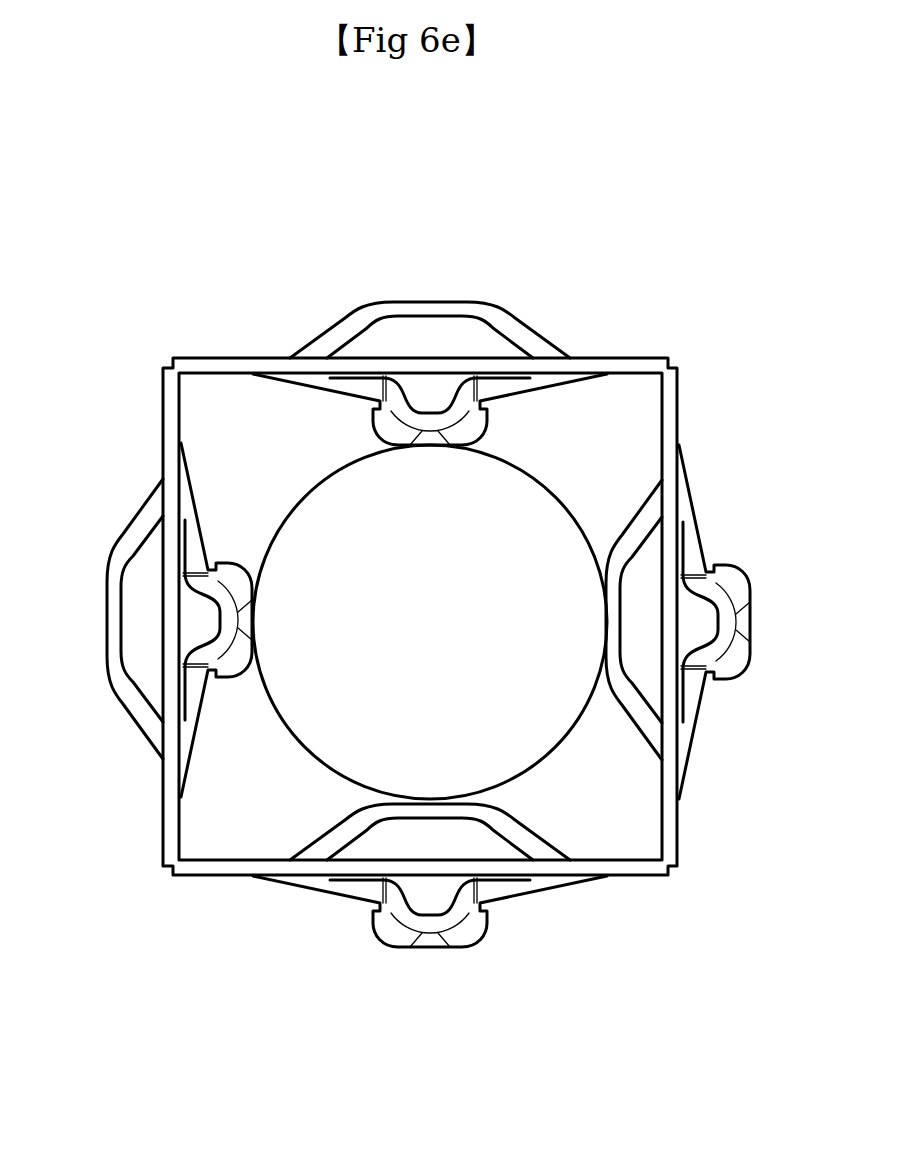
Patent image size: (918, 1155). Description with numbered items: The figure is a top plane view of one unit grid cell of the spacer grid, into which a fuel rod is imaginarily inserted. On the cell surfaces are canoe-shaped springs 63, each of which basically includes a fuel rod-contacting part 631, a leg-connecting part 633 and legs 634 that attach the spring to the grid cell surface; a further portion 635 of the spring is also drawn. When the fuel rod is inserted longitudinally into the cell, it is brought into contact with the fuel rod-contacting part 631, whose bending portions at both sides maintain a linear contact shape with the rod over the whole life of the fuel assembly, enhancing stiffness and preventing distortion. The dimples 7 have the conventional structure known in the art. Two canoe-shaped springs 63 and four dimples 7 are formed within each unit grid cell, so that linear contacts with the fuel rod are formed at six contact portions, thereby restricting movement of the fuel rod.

The canoe-shaped spring 63 is at (343, 400).
The fuel rod-contacting part 631 is at (430, 448).
The leg-connecting part 633 is at (432, 420).
The legs 634 is at (320, 381).
The elastic latch portion 635 is at (695, 623).
The dimples 7 is at (630, 553).